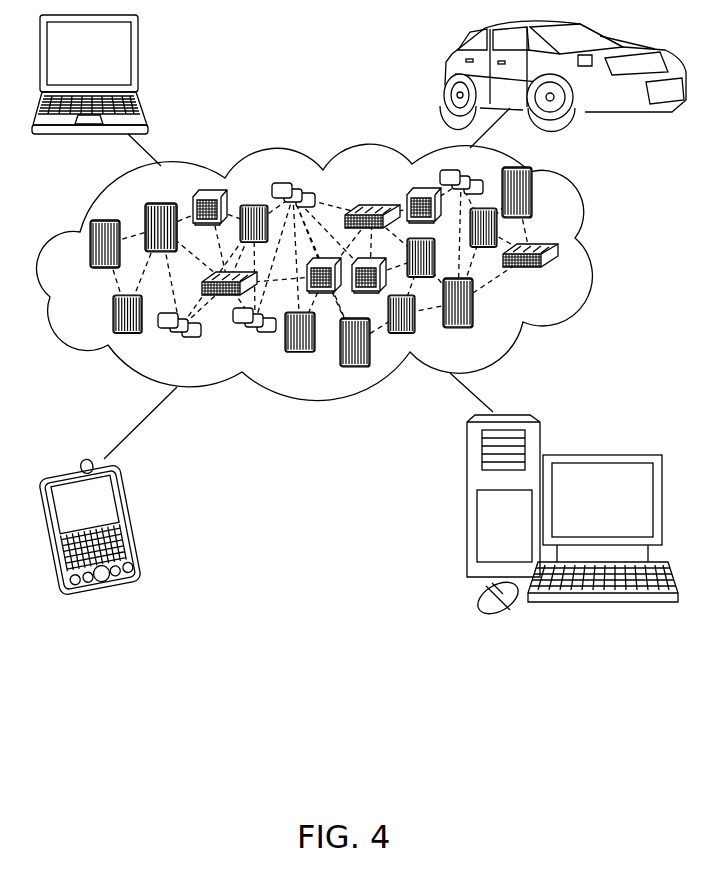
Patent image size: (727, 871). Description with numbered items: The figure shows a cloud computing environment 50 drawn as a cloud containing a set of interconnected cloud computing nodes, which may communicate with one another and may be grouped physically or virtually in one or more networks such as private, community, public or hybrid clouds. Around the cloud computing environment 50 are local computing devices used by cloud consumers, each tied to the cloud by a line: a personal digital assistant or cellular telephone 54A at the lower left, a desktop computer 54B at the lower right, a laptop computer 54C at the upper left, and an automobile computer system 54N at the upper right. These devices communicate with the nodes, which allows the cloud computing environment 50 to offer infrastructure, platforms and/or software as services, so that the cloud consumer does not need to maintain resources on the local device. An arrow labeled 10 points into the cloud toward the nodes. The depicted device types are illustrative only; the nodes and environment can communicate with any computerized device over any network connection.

The cloud computing environment 10 is at (562, 277).
The cloud computing environment 50 is at (601, 252).
The personal digital assistant or cellular telephone 54A is at (136, 521).
The desktop computer 54B is at (601, 455).
The laptop computer 54C is at (138, 62).
The automobile computer system 54N is at (447, 70).